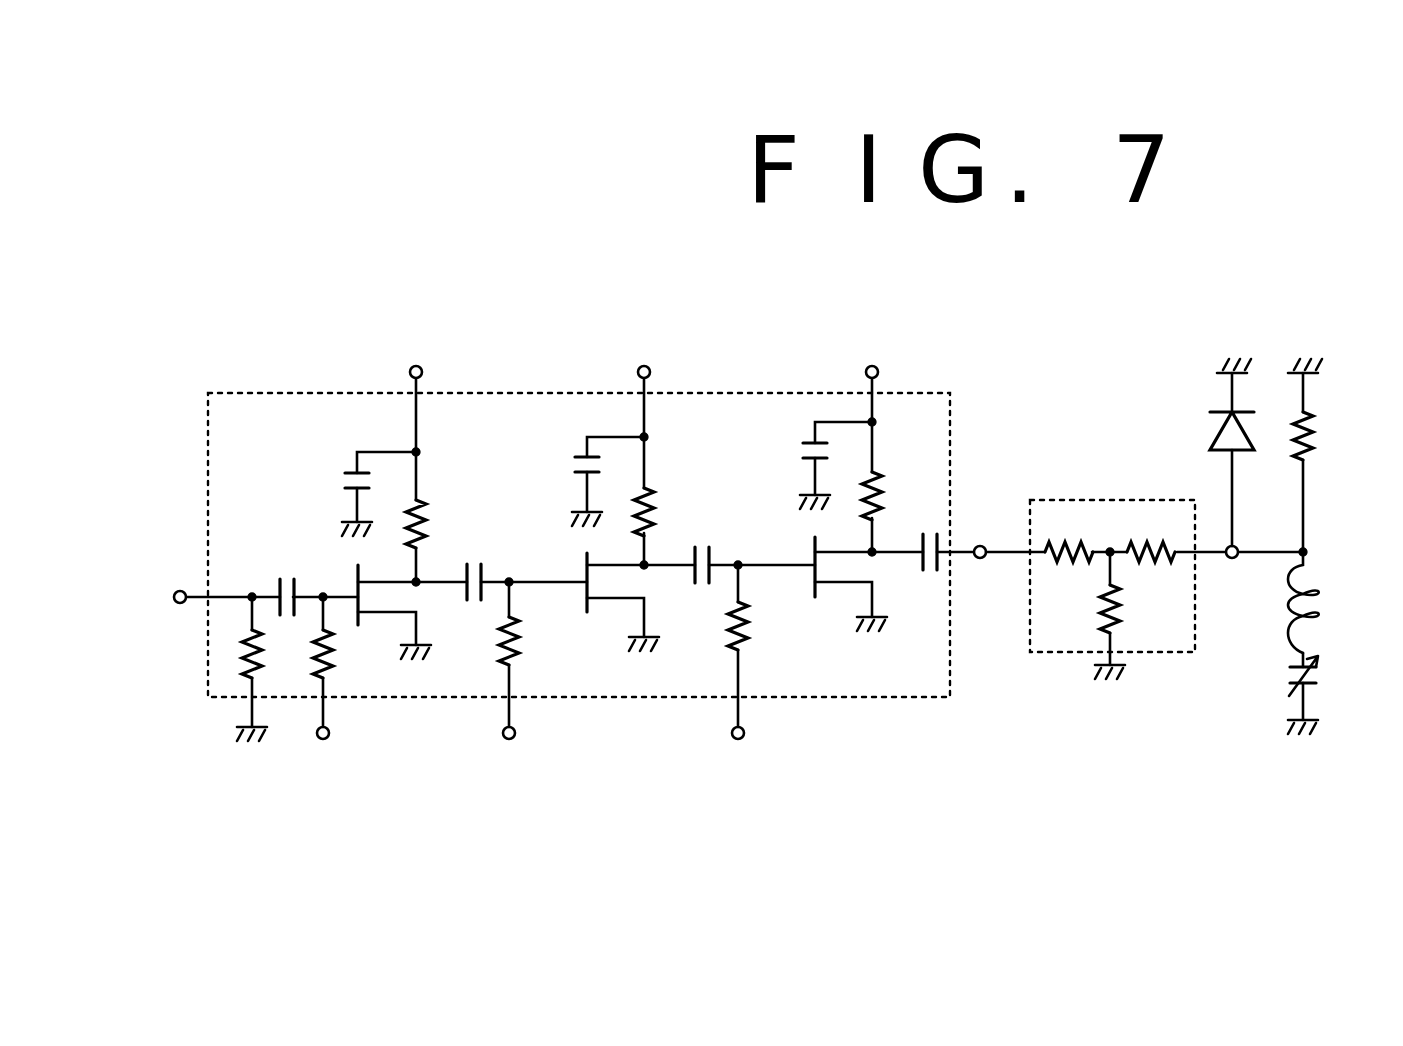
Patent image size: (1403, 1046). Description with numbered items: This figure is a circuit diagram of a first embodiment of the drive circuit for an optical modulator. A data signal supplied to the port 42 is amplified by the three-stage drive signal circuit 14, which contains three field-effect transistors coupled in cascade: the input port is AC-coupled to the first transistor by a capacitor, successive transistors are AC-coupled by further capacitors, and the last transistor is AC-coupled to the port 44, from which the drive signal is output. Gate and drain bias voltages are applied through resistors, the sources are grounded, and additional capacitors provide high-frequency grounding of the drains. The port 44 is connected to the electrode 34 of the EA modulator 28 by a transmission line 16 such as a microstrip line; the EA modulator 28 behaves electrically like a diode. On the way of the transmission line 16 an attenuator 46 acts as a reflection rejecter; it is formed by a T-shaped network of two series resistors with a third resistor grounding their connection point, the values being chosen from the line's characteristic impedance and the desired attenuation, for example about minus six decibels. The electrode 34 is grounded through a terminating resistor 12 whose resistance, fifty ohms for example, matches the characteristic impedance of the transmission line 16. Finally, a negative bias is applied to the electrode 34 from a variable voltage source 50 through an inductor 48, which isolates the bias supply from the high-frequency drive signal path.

The drive signal circuit 14 is at (293, 393).
The port 42 is at (180, 590).
The port 44 is at (983, 544).
The transmission line 16 is at (996, 557).
The attenuator 46 is at (1030, 652).
The electrode 34 is at (1238, 548).
The EA modulator 28 is at (1212, 430).
The terminating resistor 12 is at (1325, 432).
The inductor 48 is at (1325, 612).
The variable voltage source 50 is at (1288, 682).